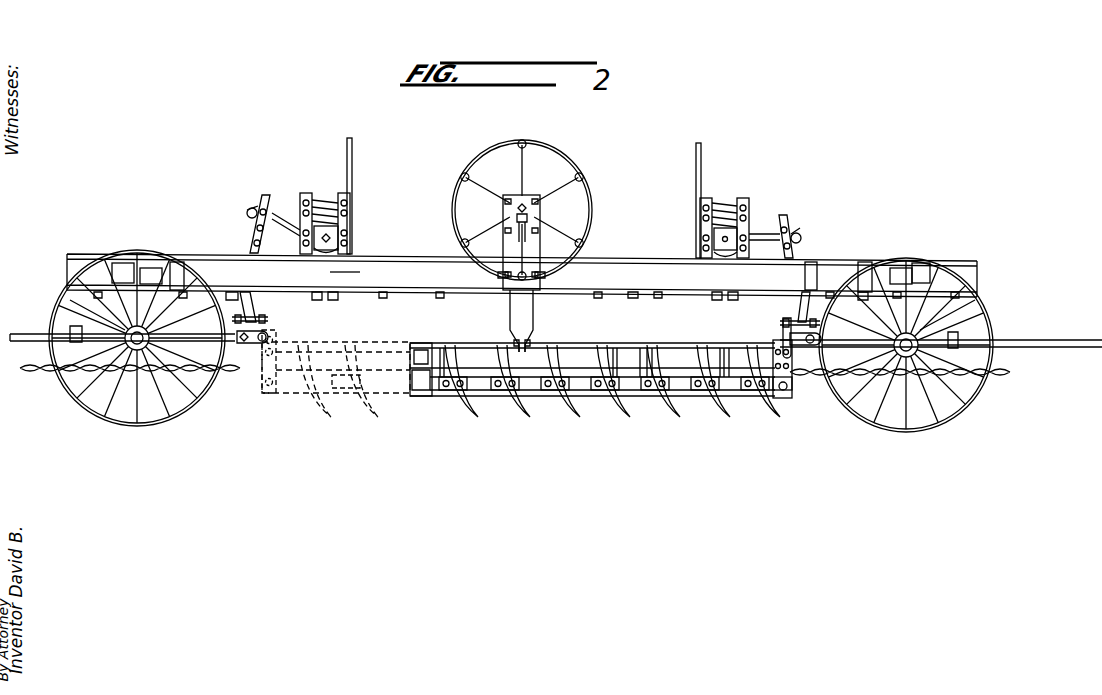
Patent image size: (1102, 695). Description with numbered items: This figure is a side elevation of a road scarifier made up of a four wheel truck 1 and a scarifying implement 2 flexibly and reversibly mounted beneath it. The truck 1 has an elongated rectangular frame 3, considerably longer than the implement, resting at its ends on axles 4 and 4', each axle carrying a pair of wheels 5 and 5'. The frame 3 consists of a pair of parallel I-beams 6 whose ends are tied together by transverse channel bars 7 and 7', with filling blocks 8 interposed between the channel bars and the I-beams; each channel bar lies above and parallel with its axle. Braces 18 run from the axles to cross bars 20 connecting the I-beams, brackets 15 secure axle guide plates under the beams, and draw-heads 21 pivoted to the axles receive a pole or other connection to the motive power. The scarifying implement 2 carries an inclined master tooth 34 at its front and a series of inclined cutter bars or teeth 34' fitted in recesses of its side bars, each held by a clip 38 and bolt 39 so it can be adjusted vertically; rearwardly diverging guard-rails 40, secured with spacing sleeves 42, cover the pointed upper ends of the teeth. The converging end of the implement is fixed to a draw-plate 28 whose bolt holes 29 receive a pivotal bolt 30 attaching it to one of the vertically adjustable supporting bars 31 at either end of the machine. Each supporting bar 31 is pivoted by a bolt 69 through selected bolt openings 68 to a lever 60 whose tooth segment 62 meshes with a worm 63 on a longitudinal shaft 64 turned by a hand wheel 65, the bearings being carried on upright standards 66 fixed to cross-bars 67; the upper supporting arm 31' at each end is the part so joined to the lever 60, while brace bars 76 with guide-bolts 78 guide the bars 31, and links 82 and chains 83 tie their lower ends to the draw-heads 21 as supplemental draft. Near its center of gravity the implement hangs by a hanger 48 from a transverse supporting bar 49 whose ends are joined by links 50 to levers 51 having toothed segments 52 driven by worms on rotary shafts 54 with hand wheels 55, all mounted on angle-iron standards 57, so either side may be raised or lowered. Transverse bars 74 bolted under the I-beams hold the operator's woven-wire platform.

The four wheel truck 1 is at (875, 262).
The scarifying implement 2 is at (616, 415).
The rectangular frame 3 is at (345, 275).
The axle 4 is at (951, 337).
The axle 4' is at (94, 327).
The wheel 5 is at (906, 358).
The wheel 5' is at (137, 354).
The I-beam 6 is at (632, 298).
The channel bar 7 is at (857, 310).
The channel bar 7' is at (121, 250).
The filling block 8 is at (152, 268).
The bracket 15 is at (80, 305).
The brace 18 is at (177, 290).
The cross bar 20 is at (806, 290).
The draw-head 21 is at (27, 341).
The draw-plate 28 is at (263, 392).
The bolt hole 29 is at (794, 393).
The pivotal bolt 30 is at (783, 325).
The supporting bar 31 is at (525, 306).
The lever 31' is at (528, 226).
The master tooth 34 is at (521, 394).
The cutter bar or tooth 34' is at (531, 396).
The clip 38 is at (465, 413).
The bolt 39 is at (565, 413).
The guard-rail 40 is at (662, 348).
The spacing sleeve 42 is at (722, 348).
The hanger 48 is at (562, 348).
The supporting bar 49 is at (528, 346).
The link 50 is at (512, 320).
The lever 51 is at (578, 240).
The toothed segment 52 is at (540, 218).
The rotary shaft 54 is at (503, 215).
The hand wheel 55 is at (513, 142).
The angle-iron standard 57 is at (503, 274).
The lever 60 is at (288, 224).
The tooth segment 62 is at (350, 213).
The worm 63 is at (325, 203).
The shaft 64 is at (352, 248).
The hand wheel 65 is at (352, 165).
The upright standard 66 is at (314, 250).
The cross-bar 67 is at (316, 292).
The bolt opening 68 is at (247, 214).
The pivotal bolt 69 is at (256, 207).
The transverse bar 74 is at (400, 299).
The brace bar 76 is at (228, 292).
The guide-bolt 78 is at (270, 319).
The link 82 is at (250, 345).
The chain 83 is at (62, 371).